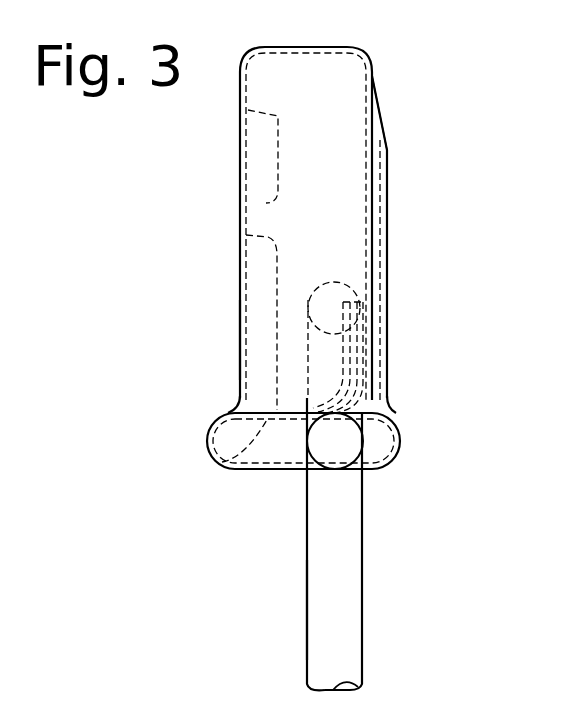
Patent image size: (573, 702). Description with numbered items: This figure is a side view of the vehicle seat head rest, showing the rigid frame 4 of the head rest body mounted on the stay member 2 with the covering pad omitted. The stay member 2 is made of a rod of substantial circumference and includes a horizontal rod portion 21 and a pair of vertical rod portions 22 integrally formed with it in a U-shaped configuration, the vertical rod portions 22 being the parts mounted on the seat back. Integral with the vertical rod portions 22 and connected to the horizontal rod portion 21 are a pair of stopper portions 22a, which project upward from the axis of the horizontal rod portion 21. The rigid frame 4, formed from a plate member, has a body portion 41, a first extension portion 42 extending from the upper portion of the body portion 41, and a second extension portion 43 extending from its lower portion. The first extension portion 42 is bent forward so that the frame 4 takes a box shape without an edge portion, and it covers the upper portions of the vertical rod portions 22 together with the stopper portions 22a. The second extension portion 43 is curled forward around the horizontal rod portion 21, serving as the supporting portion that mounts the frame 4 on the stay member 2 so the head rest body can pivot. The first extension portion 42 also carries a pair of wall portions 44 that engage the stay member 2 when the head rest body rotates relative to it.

The stay member 2 is at (362, 615).
The horizontal rod portion 21 is at (340, 445).
The vertical rod portions 22 is at (315, 620).
The stopper portions 22a is at (358, 302).
The rigid frame 4 is at (358, 48).
The body portion 41 is at (385, 145).
The first extension portion 42 is at (252, 272).
The second extension portion 43 is at (345, 355).
The wall portions 44 is at (240, 338).